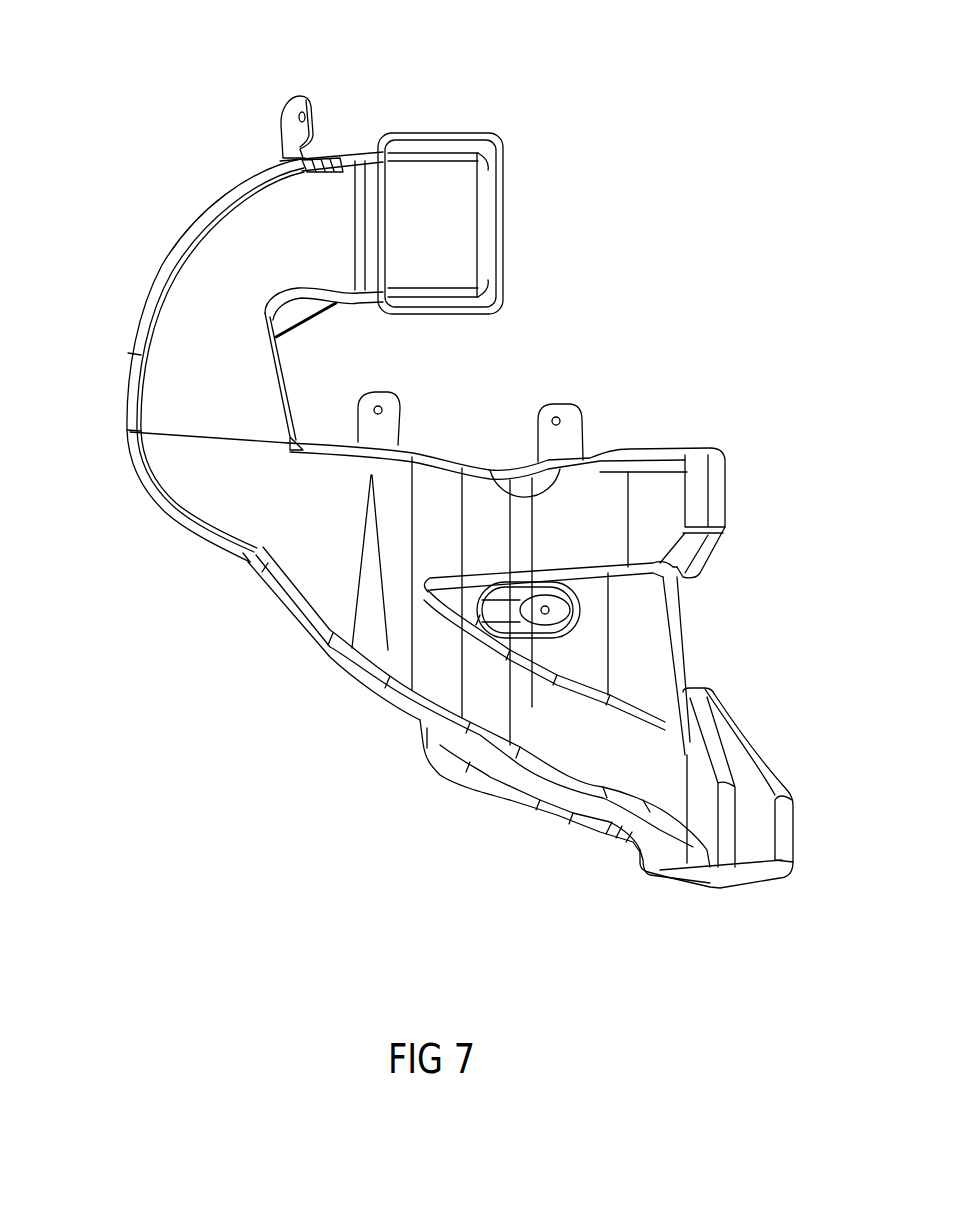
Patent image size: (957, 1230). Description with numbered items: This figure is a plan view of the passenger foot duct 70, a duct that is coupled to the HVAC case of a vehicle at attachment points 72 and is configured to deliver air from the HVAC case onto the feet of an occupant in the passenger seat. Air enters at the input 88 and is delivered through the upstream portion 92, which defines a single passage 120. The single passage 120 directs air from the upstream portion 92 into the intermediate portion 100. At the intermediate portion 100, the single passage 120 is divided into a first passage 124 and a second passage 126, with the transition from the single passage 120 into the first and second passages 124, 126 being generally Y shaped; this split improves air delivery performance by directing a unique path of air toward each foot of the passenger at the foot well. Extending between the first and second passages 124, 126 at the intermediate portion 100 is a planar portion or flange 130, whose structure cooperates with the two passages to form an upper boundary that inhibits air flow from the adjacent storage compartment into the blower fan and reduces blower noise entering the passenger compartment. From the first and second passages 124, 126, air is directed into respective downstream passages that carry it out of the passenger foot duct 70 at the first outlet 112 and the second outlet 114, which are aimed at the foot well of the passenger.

The passenger foot duct 70 is at (161, 591).
The attachment points 72 is at (297, 117).
The input 88 is at (490, 223).
The upstream portion 92 is at (243, 233).
The intermediate portion 100 is at (413, 643).
The first outlet 112 is at (725, 493).
The second outlet 114 is at (793, 836).
The single passage 120 is at (172, 340).
The first passage 124 is at (487, 497).
The second passage 126 is at (490, 705).
The flange 130 is at (647, 664).